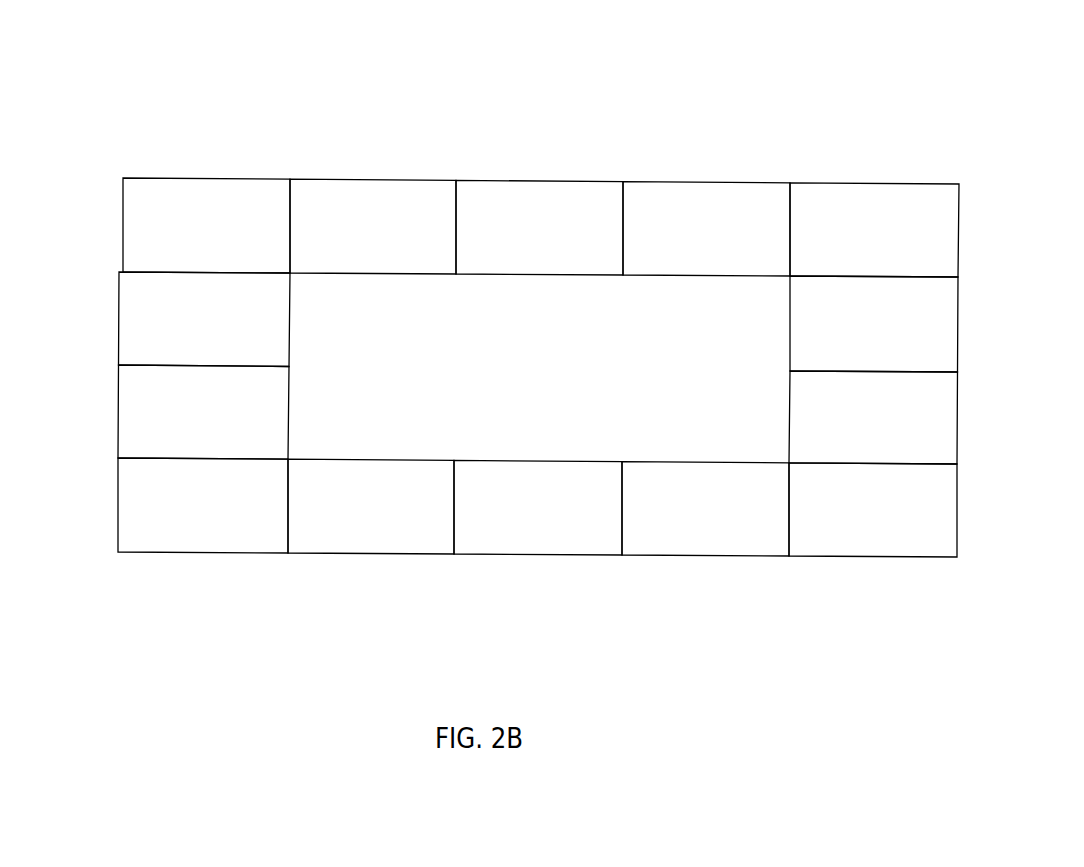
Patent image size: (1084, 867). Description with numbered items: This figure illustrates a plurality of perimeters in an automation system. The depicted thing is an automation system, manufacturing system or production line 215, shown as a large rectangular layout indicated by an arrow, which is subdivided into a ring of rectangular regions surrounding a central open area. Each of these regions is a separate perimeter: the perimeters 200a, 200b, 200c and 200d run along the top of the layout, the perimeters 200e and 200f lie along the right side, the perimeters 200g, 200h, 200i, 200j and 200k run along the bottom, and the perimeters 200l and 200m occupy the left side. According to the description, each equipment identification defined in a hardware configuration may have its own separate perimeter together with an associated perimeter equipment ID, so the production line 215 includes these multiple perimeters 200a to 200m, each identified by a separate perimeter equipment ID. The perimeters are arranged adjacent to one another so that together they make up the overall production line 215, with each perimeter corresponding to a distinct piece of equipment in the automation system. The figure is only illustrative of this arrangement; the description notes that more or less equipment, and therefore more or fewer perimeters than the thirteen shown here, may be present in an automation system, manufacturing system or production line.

The production line 215 is at (575, 141).
The perimeter 200a is at (223, 200).
The perimeter 200b is at (363, 200).
The perimeter 200c is at (545, 247).
The perimeter 200d is at (735, 202).
The perimeter 200e is at (805, 295).
The perimeter 200f is at (787, 395).
The perimeter 200g is at (878, 528).
The perimeter 200h is at (752, 537).
The perimeter 200i is at (582, 527).
The perimeter 200j is at (417, 535).
The perimeter 200k is at (270, 533).
The perimeter 200l is at (119, 427).
The perimeter 200m is at (119, 343).